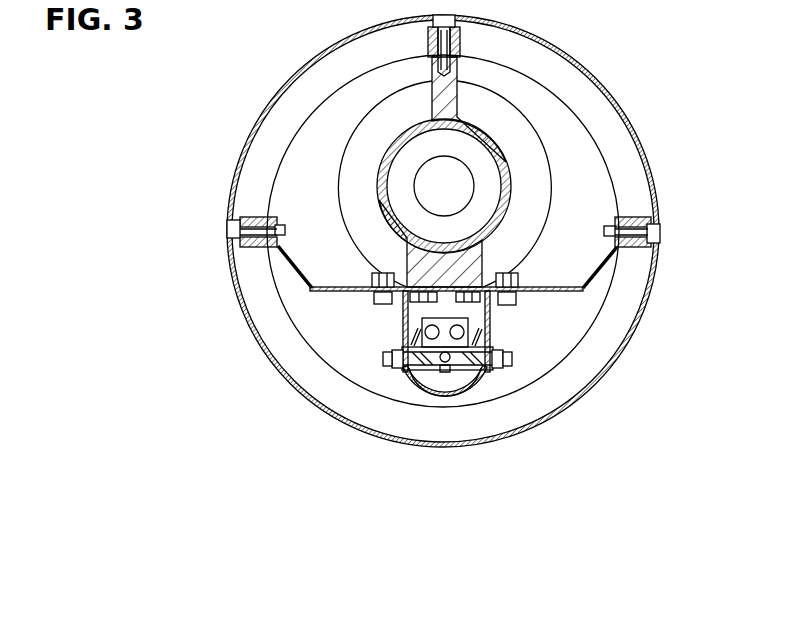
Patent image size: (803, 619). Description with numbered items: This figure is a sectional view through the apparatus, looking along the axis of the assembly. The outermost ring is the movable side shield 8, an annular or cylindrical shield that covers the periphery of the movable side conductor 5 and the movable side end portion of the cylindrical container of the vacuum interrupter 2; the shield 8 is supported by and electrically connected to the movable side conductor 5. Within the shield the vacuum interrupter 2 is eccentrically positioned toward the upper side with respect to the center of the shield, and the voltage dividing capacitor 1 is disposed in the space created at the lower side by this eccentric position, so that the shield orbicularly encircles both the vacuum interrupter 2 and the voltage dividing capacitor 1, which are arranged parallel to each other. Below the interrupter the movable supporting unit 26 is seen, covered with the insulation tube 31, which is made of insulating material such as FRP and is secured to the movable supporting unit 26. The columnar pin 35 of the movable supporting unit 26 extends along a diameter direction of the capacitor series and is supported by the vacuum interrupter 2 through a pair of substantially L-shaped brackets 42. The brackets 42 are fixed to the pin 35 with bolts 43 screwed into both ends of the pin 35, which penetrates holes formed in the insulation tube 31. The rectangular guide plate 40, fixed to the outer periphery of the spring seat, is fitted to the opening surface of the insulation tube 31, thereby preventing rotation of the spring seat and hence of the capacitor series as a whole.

The voltage dividing capacitor 1 is at (396, 390).
The vacuum interrupter 2 is at (555, 127).
The movable side conductor 5 is at (506, 160).
The movable side shield 8 is at (592, 73).
The movable supporting unit 26 is at (490, 392).
The insulation tube 31 is at (442, 400).
The pin 35 is at (427, 380).
The guide plate 40 is at (450, 328).
The brackets 42 is at (402, 327).
The bolts 43 is at (384, 358).